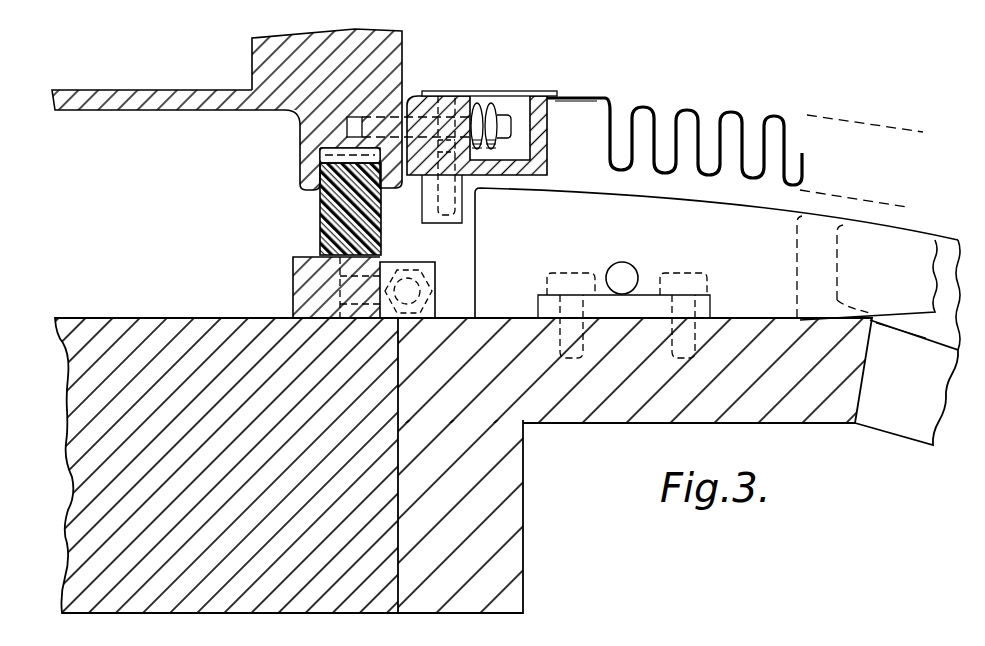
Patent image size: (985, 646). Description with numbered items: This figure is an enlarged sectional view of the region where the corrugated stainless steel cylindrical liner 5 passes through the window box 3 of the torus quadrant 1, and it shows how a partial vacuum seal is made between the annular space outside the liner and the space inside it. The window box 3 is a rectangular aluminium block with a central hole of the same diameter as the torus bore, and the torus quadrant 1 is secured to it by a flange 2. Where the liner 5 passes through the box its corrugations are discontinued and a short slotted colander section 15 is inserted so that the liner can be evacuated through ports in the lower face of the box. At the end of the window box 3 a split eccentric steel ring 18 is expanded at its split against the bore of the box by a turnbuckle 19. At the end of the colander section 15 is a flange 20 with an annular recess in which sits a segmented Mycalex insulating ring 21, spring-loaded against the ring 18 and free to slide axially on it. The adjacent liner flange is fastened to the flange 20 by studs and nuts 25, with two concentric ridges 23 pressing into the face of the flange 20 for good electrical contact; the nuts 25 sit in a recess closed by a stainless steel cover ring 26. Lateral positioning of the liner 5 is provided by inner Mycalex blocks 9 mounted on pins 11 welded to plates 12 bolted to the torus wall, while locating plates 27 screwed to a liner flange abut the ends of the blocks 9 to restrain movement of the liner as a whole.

The torus quadrant 1 is at (800, 402).
The flange 2 is at (504, 570).
The window box 3 is at (146, 330).
The cylindrical liner 5 is at (650, 108).
The inner blocks 9 is at (738, 232).
The pins 11 is at (622, 270).
The plates 12 is at (303, 154).
The colander section 15 is at (157, 80).
The split eccentric steel ring 18 is at (292, 292).
The turnbuckle 19 is at (410, 285).
The flange 20 is at (330, 125).
The Mycalex insulating ring 21 is at (318, 200).
The concentric ridges 23 is at (413, 96).
The nuts 25 is at (482, 100).
The stainless steel cover ring 26 is at (535, 95).
The locating plates 27 is at (467, 226).